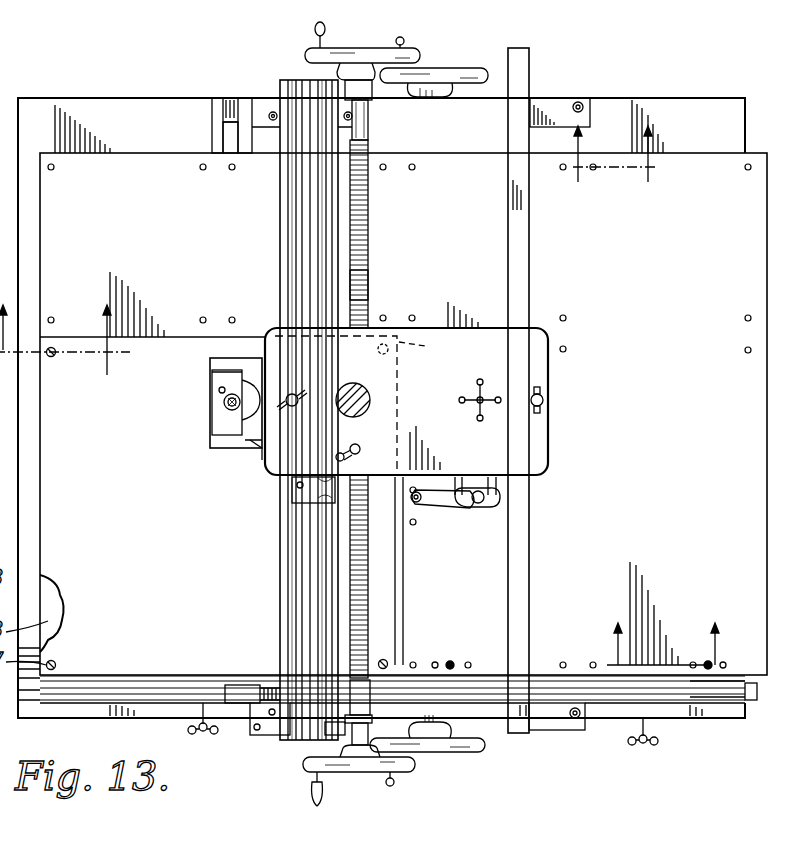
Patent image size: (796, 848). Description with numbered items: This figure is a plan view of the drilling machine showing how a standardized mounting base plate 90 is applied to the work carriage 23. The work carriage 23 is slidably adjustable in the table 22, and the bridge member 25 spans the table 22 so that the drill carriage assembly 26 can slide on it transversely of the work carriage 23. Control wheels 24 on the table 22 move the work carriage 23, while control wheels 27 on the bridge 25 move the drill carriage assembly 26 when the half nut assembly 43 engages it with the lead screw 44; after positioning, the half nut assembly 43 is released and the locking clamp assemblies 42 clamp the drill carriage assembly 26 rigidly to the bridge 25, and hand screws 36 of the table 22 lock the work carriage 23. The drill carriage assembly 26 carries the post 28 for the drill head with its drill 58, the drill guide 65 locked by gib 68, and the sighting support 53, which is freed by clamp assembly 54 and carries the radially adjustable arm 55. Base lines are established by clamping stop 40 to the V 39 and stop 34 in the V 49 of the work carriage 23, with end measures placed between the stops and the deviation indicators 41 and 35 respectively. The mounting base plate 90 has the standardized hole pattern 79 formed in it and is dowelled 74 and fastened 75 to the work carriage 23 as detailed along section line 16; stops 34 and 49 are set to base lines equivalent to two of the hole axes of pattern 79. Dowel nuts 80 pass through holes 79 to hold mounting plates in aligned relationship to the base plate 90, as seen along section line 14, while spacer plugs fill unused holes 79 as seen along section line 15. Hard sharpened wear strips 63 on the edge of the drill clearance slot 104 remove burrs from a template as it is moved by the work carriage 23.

The table 22 is at (136, 98).
The wear strips 63 is at (250, 98).
The drill clearance slot 104 is at (230, 133).
The mounting base plate 90 is at (118, 153).
The standardized mounting hole pattern 79 is at (232, 172).
The control wheels 27 is at (305, 53).
The control wheels 24 is at (465, 69).
The bridge member 25 is at (368, 190).
The V 39 is at (338, 240).
The lead screw 44 is at (368, 281).
The section line 15- 15 is at (623, 164).
The section line 14- 14 is at (66, 351).
The dowel nuts 80 is at (53, 362).
The drill 58 is at (226, 403).
The drill guide 65 is at (215, 443).
The gib 68 is at (262, 470).
The deviation indicator 41 is at (322, 503).
The drill carriage assembly 26 is at (548, 362).
The post 28 is at (371, 373).
The locking clamp assemblies 42 is at (294, 395).
The half nut assembly 43 is at (346, 452).
The clamp assembly 54 is at (477, 412).
The arm 55 is at (430, 511).
The sighting support 53 is at (496, 498).
The deviation indicator 35 is at (242, 688).
The hand screws 36 is at (206, 738).
The stop 40 is at (328, 731).
The dowel 74 is at (436, 663).
The fastener 75 is at (453, 663).
The section line 16- 16 is at (666, 631).
The stop 34 is at (749, 699).
The work carriage 23 is at (720, 686).
The V 49 is at (719, 698).